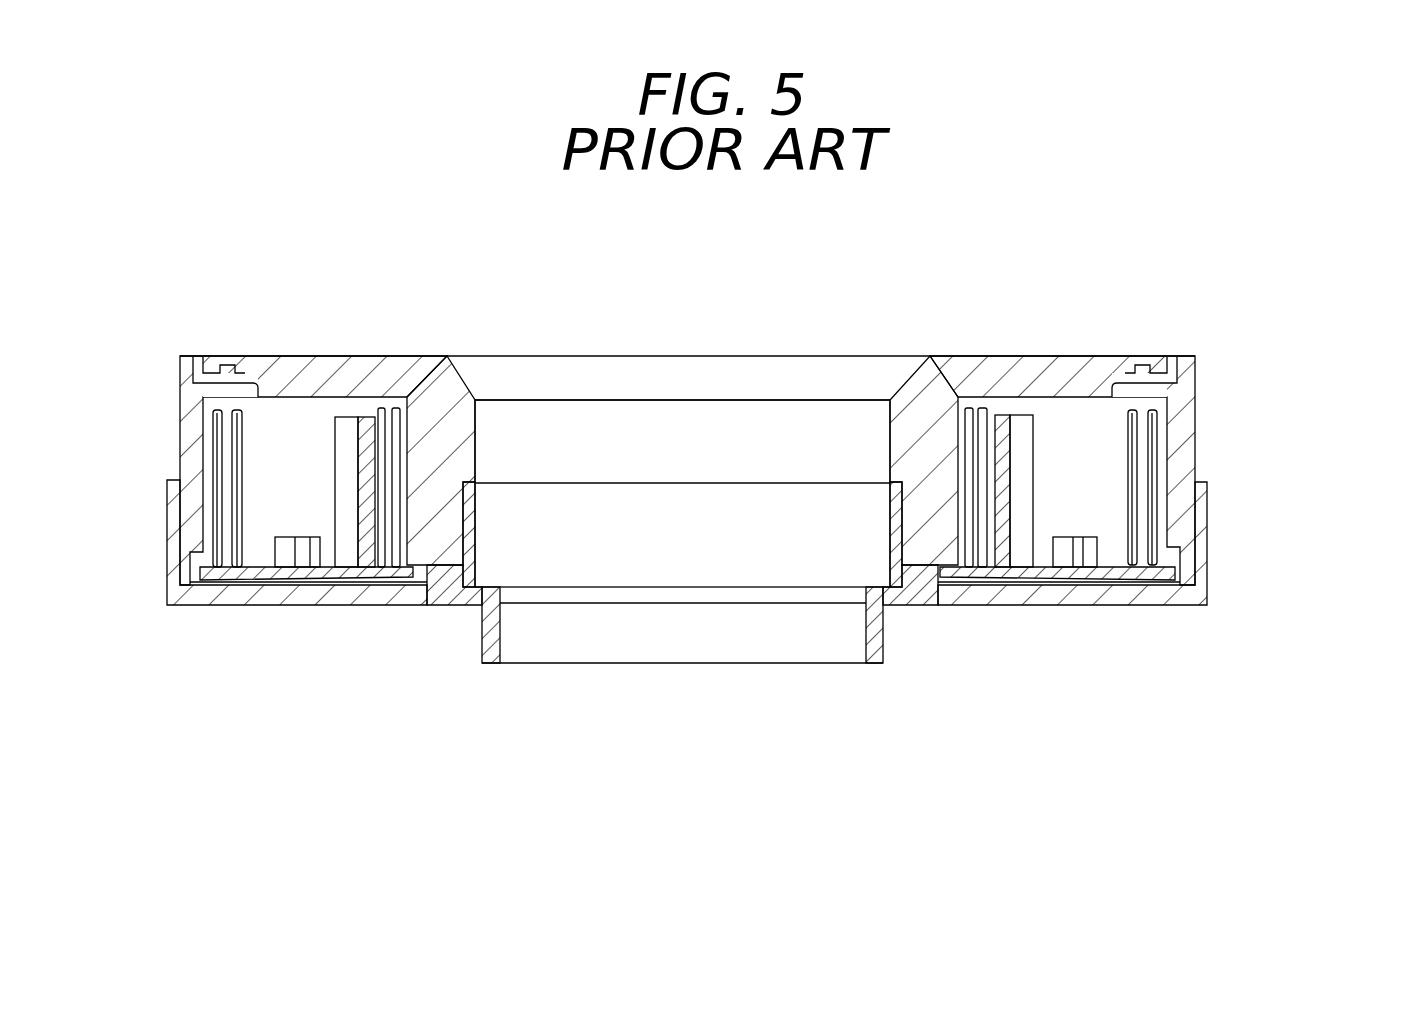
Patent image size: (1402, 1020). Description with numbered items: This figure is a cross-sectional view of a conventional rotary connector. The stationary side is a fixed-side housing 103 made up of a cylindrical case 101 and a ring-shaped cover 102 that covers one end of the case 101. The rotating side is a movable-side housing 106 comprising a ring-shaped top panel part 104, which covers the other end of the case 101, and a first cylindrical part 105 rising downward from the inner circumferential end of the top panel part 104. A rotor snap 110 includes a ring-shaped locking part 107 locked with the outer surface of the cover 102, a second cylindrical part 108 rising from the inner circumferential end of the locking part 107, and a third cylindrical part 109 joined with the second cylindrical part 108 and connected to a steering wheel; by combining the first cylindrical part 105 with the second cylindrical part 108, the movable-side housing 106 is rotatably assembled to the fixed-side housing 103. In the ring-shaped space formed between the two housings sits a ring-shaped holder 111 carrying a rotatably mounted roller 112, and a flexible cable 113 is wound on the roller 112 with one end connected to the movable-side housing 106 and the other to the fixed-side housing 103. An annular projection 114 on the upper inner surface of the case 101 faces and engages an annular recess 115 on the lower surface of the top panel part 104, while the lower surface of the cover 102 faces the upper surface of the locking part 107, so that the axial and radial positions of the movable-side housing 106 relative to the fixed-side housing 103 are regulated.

The cylindrical case 101 is at (1187, 440).
The ring-shaped cover 102 is at (743, 561).
The fixed-side housing 103 is at (774, 501).
The ring-shaped top panel part 104 is at (412, 372).
The first cylindrical part 105 is at (477, 440).
The movable-side housing 106 is at (670, 399).
The ring-shaped locking part 107 is at (688, 742).
The second cylindrical part 108 is at (478, 540).
The third cylindrical part 109 is at (500, 640).
The rotor snap 110 is at (670, 638).
The ring-shaped holder 111 is at (270, 580).
The roller 112 is at (342, 482).
The flexible cable 113 is at (213, 462).
The annular projection 114 is at (1193, 363).
The annular recess 115 is at (1150, 360).